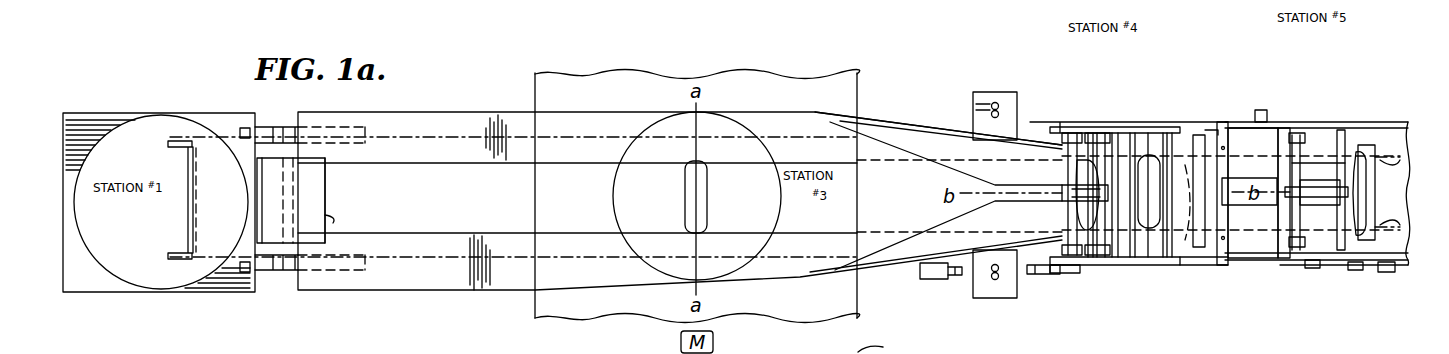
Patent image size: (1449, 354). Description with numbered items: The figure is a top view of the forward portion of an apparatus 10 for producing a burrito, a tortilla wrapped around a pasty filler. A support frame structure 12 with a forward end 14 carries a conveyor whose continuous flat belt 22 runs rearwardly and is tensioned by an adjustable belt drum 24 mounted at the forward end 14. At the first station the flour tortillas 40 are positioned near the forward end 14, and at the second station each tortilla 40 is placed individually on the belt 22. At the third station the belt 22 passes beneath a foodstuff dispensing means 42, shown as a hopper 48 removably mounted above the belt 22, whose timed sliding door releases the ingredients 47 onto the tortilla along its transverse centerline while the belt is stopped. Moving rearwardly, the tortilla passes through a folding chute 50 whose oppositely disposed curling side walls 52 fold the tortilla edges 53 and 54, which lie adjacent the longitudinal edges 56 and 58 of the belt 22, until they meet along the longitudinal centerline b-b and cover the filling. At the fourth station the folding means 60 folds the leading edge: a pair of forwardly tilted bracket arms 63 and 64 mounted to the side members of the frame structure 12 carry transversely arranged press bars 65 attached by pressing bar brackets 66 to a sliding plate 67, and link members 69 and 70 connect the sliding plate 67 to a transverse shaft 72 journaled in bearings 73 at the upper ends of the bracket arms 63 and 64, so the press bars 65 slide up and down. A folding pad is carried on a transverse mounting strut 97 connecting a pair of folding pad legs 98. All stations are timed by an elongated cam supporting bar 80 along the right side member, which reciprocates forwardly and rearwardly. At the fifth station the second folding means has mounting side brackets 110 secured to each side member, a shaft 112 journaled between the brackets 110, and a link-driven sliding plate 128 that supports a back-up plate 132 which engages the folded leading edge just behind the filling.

The apparatus for producing a foodstuff product 10 is at (1383, 60).
The support frame structure 12 is at (484, 303).
The forward end 14 is at (390, 232).
The continuous flat belt 22 is at (403, 192).
The belt drum 24 is at (333, 220).
The flour tortilla 40 is at (167, 122).
The foodstuff dispensing means 42 is at (529, 81).
The ingredients 47 is at (707, 208).
The hopper 48 is at (545, 322).
The folding chute 50 is at (913, 121).
The curling side walls 52 is at (1022, 181).
The tortilla edge 53 is at (1228, 120).
The tortilla edge 54 is at (1205, 240).
The longitudinal edge of belt 56 is at (1245, 155).
The longitudinal edge of belt 58 is at (1212, 266).
The folding means 60 is at (1129, 128).
The bracket arm 63 is at (1090, 133).
The bracket arm 64 is at (1060, 130).
The press bars 65 is at (1160, 154).
The pressing bar brackets 66 is at (1138, 148).
The sliding plate 67 is at (1170, 155).
The link member 69 is at (1100, 262).
The link member 70 is at (1062, 202).
The transverse shaft 72 is at (1060, 264).
The bearings 73 is at (1067, 130).
The cam supporting bar 80 is at (1185, 222).
The transverse mounting strut 97 is at (1242, 150).
The folding pad legs 98 is at (1255, 262).
The mounting side brackets 110 is at (1283, 126).
The shaft 112 is at (1297, 168).
The sliding plate 128 is at (1345, 195).
The back-up plate 132 is at (1368, 145).